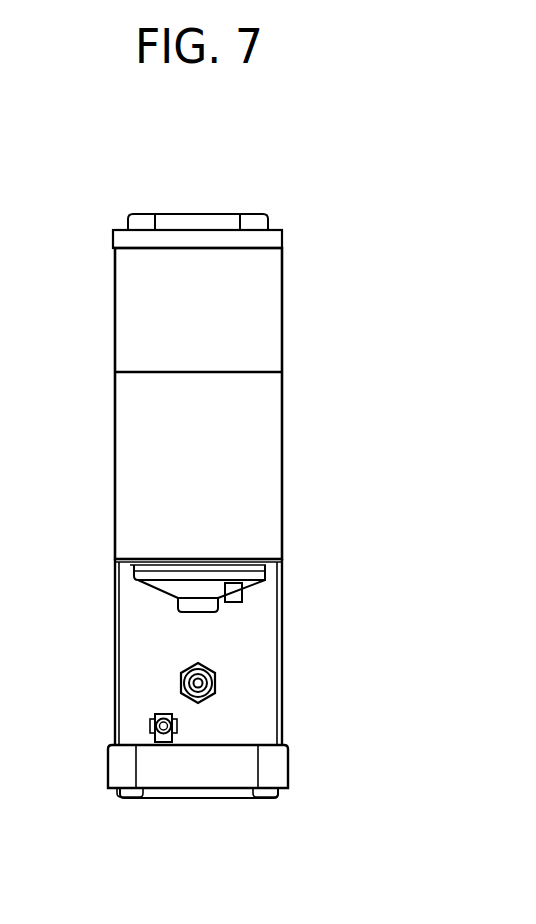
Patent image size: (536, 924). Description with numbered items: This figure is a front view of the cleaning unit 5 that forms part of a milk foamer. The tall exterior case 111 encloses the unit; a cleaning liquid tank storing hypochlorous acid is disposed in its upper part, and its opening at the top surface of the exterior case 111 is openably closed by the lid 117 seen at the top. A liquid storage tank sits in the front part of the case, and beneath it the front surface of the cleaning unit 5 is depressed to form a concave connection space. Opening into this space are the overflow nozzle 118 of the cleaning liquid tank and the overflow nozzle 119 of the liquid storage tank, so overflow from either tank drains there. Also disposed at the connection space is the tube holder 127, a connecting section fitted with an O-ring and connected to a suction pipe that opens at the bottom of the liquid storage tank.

The cleaning unit 5 is at (213, 190).
The exterior case 111 is at (283, 295).
The lid 117 is at (170, 214).
The overflow nozzle 118 is at (152, 722).
The overflow nozzle 119 is at (242, 595).
The tube holder 127 is at (217, 681).